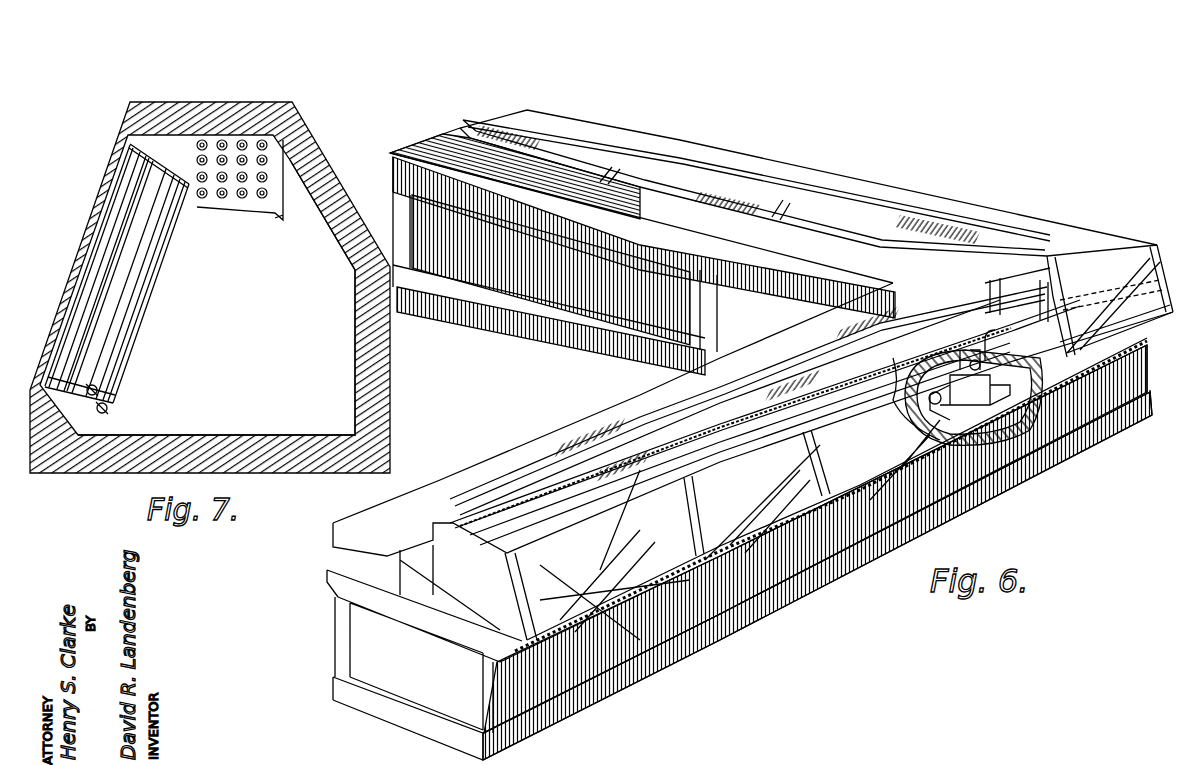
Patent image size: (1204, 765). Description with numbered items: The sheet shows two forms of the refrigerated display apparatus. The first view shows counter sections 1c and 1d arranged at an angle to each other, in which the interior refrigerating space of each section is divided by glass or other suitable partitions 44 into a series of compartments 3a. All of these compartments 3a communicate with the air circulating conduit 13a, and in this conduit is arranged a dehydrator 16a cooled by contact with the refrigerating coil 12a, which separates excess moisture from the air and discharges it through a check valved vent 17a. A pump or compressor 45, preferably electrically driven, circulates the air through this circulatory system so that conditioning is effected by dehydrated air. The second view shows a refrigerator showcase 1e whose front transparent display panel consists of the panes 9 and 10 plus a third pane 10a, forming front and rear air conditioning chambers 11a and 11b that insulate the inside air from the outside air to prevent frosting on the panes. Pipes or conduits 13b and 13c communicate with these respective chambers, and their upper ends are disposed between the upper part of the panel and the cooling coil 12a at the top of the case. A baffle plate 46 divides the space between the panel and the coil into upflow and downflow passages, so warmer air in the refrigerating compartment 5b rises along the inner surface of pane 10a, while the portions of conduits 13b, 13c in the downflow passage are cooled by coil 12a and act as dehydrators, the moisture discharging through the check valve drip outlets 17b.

In FIG. 6, the counter section 1c is at (750, 521).
In FIG. 6, the counter section 1d is at (773, 240).
In FIG. 7, the showcase 1e is at (160, 104).
In FIG. 6, the compartments 3a is at (1040, 387).
In FIG. 7, the cabinet wall 5b is at (216, 297).
In FIG. 7, the pane 9 is at (108, 183).
In FIG. 7, the pane 10 is at (103, 250).
In FIG. 7, the third pane 10a is at (117, 288).
In FIG. 7, the front air conditioning chamber 11a is at (117, 223).
In FIG. 7, the rear air conditioning chamber 11b is at (117, 237).
In FIG. 7, the refrigerating coil 12a is at (273, 140).
In FIG. 6, the refrigerating coil 12a is at (797, 333).
In FIG. 6, the air circulating conduit 13a is at (870, 207).
In FIG. 7, the conduit 13b is at (123, 355).
In FIG. 7, the conduit 13c is at (120, 320).
In FIG. 6, the dehydrator 16a is at (907, 300).
In FIG. 6, the check valved vent 17a is at (1020, 358).
In FIG. 7, the check valve drip outlets 17b is at (107, 408).
In FIG. 6, the partitions 44 is at (640, 517).
In FIG. 6, the pump or compressor 45 is at (950, 427).
In FIG. 7, the baffle plate 46 is at (167, 157).